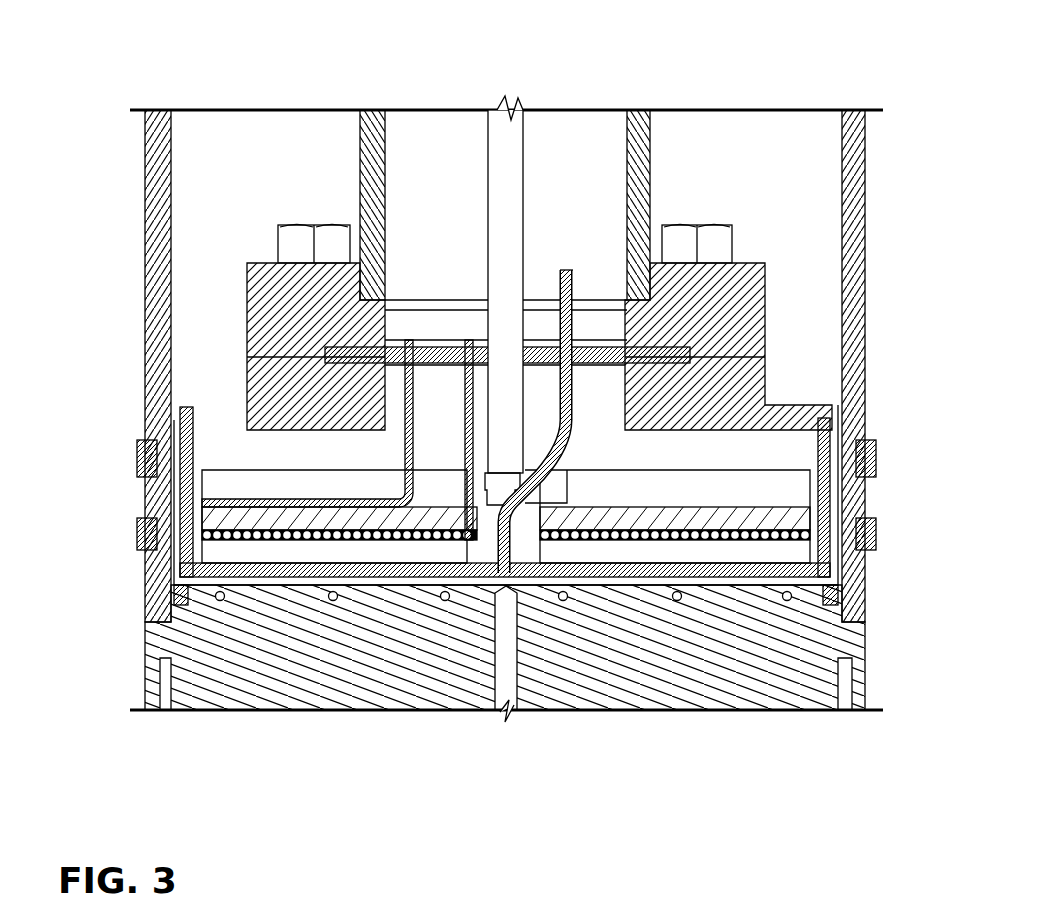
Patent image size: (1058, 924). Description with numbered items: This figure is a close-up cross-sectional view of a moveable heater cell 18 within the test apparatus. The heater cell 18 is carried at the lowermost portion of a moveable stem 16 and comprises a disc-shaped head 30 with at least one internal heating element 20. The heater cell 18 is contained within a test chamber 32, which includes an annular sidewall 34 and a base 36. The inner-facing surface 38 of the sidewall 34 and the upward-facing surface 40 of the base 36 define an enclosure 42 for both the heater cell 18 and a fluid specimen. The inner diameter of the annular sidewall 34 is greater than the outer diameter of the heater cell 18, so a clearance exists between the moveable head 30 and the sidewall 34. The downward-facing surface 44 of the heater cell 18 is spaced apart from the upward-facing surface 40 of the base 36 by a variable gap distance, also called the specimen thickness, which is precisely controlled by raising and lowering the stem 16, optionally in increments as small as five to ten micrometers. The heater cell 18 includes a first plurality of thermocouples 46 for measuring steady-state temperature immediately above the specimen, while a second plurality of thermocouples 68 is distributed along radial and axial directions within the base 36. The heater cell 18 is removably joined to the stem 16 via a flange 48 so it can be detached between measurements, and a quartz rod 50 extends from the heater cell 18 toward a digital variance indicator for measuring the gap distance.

The moveable stem 16 is at (652, 155).
The heater cell 18 is at (838, 488).
The internal heating element 20 is at (763, 505).
The disc-shaped head 30 is at (785, 400).
The test chamber 32 is at (145, 607).
The annular sidewall 34 is at (145, 345).
The base 36 is at (305, 670).
The inner-facing surface 38 is at (165, 290).
The upward-facing surface 40 is at (185, 548).
The enclosure 42 is at (258, 166).
The downward-facing surface 44 is at (797, 583).
The first plurality of thermocouples 46 is at (470, 537).
The flange 48 is at (247, 270).
The quartz rod 50 is at (488, 148).
The second plurality of thermocouples 68 is at (443, 600).